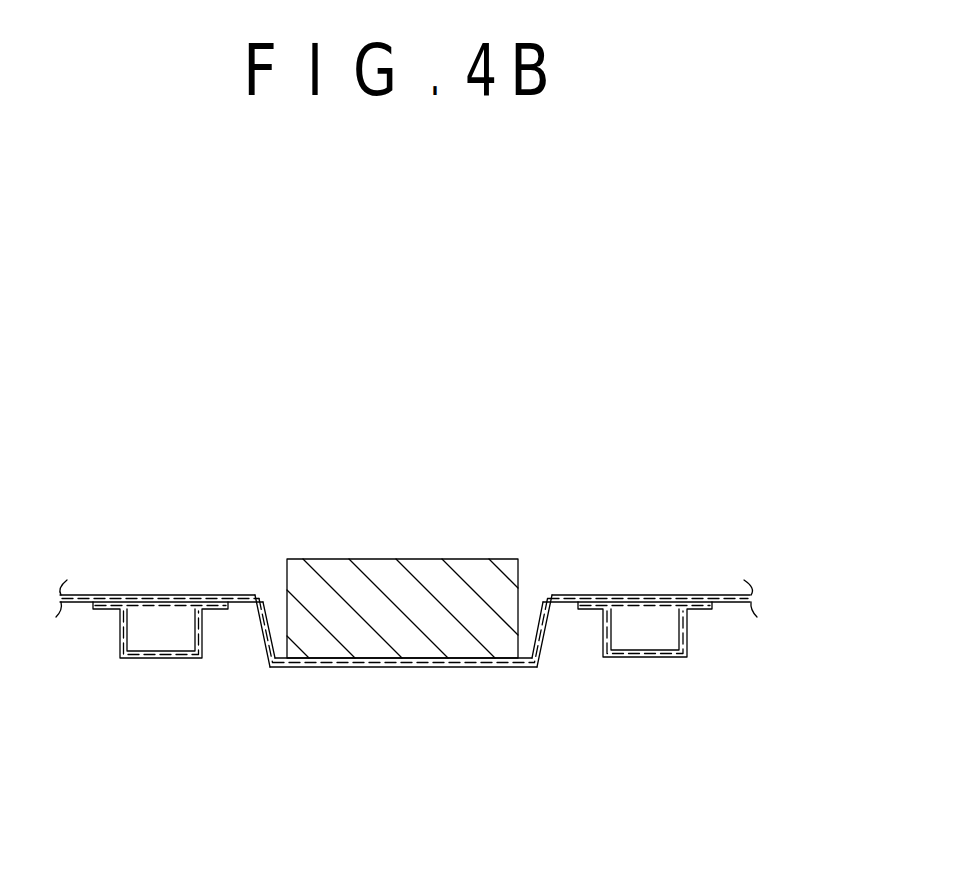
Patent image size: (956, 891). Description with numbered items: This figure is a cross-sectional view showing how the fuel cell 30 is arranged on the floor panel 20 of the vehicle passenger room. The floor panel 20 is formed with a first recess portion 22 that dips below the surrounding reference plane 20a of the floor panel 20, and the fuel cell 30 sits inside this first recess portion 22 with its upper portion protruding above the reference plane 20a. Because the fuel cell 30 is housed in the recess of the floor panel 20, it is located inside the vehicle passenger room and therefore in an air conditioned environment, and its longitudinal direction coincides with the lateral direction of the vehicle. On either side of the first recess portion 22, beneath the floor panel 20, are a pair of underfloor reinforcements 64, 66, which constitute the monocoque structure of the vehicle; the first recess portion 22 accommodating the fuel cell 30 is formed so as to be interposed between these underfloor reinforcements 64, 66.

The floor panel 20 is at (406, 551).
The reference plane 20a is at (366, 551).
The first recess portion 22 is at (417, 660).
The fuel cell 30 is at (378, 568).
The underfloor reinforcement 64 is at (137, 658).
The underfloor reinforcement 66 is at (655, 658).